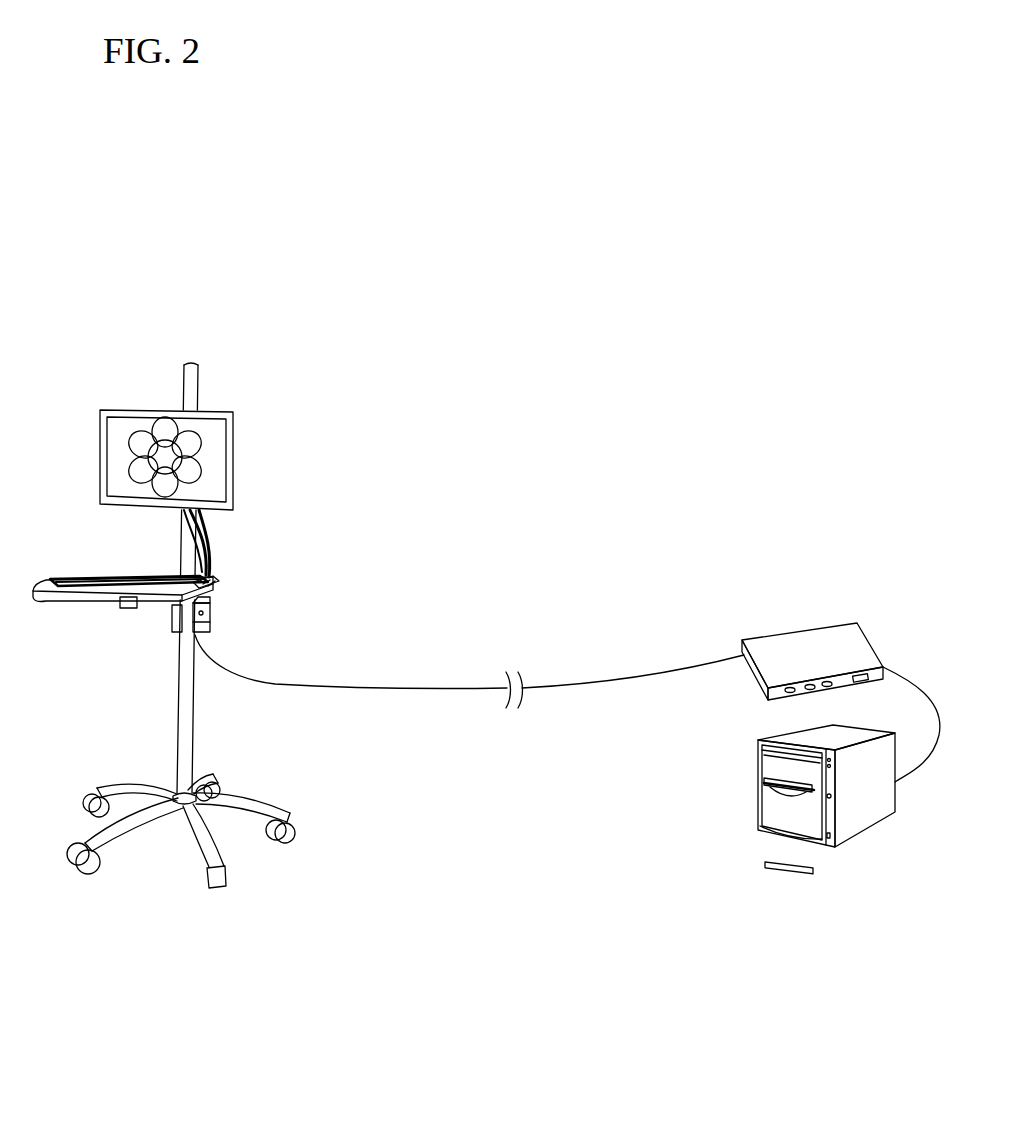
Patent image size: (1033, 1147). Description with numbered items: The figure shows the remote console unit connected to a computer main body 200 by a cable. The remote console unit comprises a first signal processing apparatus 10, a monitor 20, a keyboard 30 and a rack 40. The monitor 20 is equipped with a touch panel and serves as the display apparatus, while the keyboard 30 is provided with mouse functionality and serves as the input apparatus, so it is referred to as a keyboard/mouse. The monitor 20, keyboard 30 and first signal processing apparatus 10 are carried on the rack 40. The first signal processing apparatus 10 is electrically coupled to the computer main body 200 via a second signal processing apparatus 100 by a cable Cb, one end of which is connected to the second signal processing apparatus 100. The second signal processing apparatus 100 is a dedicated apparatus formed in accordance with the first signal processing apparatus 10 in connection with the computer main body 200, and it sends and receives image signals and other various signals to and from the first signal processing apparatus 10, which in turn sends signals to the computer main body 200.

The first signal processing apparatus 10 is at (211, 615).
The monitor 20 is at (234, 452).
The keyboard 30 is at (214, 581).
The rack 40 is at (175, 703).
The cable Cb is at (545, 683).
The second signal processing apparatus 100 is at (766, 636).
The computer main body 200 is at (773, 836).